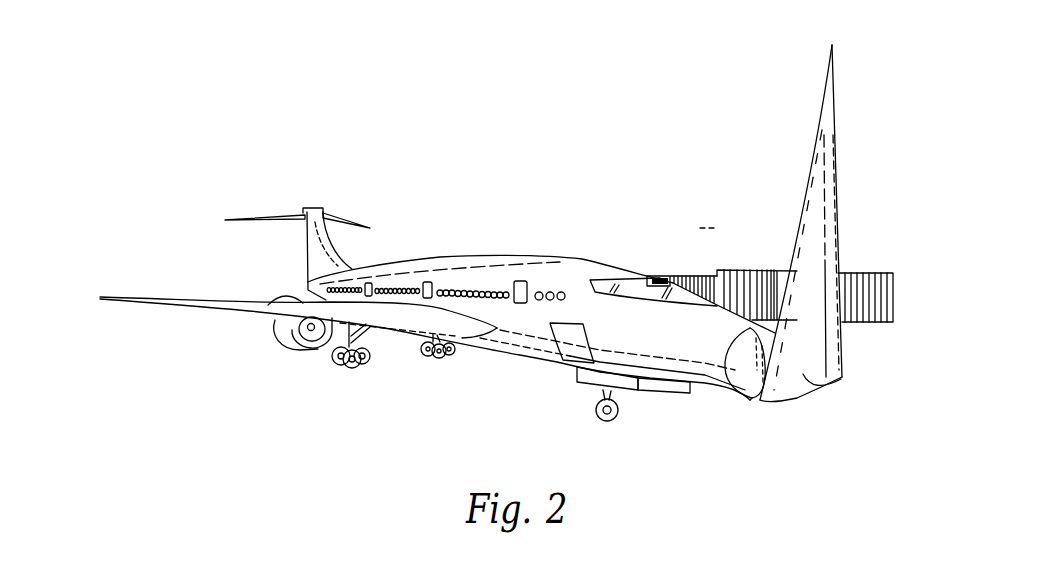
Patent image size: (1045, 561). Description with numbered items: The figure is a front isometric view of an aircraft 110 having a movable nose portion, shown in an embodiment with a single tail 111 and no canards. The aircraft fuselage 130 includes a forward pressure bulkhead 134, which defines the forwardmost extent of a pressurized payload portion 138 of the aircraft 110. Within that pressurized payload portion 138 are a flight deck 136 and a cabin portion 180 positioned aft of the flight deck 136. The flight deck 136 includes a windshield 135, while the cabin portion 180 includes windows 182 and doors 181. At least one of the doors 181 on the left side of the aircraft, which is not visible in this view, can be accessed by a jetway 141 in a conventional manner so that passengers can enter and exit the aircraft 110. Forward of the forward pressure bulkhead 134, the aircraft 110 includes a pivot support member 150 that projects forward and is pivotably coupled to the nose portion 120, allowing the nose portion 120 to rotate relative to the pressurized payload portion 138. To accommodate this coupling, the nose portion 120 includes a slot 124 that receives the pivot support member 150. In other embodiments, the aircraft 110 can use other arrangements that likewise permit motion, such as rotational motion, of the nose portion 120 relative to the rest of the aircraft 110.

The aircraft 110 is at (451, 297).
The single tail 111 is at (348, 246).
The nose portion 120 is at (833, 246).
The slot 124 is at (826, 398).
The aircraft fuselage 130 is at (541, 313).
The forward pressure bulkhead 134 is at (742, 393).
The windshield 135 is at (647, 289).
The flight deck 136 is at (655, 256).
The pressurized payload portion 138 is at (535, 344).
The jetway 141 is at (748, 270).
The pivot support member 150 is at (742, 370).
The cabin portion 180 is at (452, 266).
The doors 181 is at (518, 306).
The windows 182 is at (503, 298).